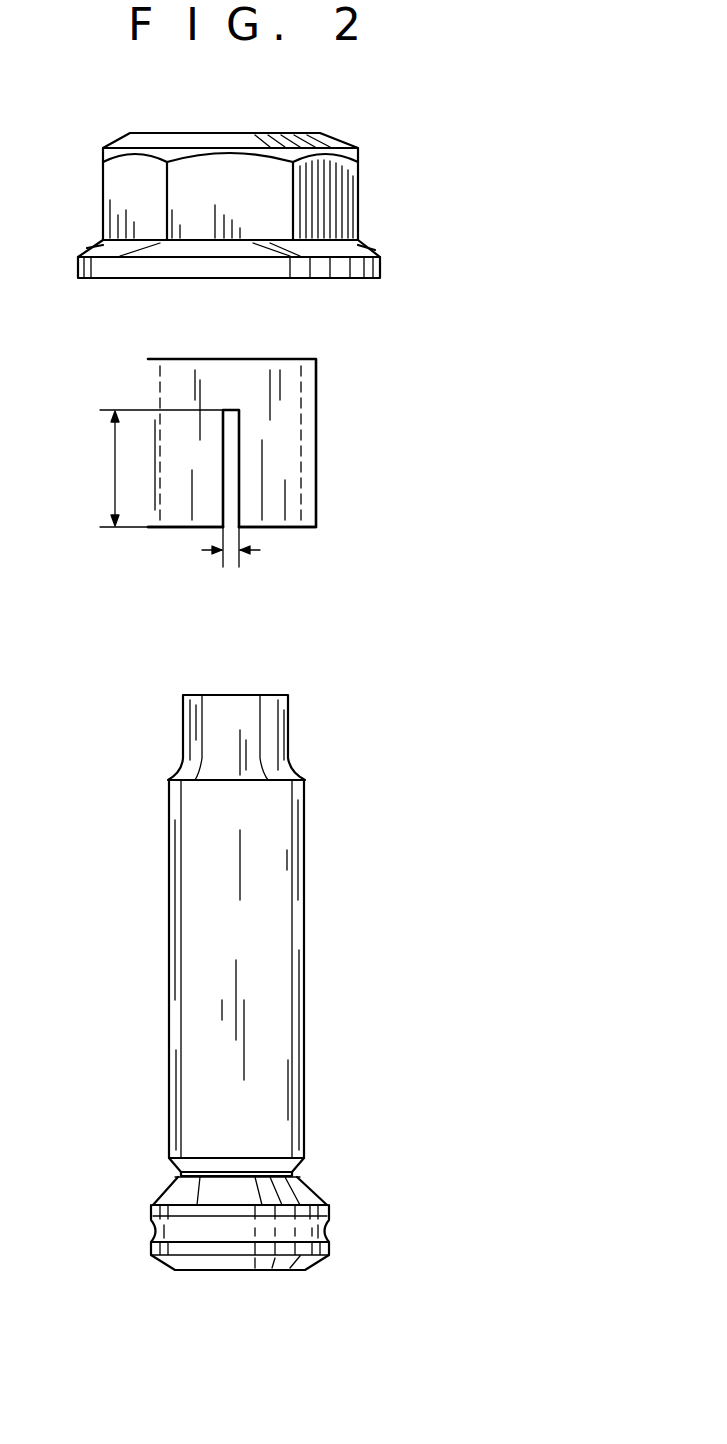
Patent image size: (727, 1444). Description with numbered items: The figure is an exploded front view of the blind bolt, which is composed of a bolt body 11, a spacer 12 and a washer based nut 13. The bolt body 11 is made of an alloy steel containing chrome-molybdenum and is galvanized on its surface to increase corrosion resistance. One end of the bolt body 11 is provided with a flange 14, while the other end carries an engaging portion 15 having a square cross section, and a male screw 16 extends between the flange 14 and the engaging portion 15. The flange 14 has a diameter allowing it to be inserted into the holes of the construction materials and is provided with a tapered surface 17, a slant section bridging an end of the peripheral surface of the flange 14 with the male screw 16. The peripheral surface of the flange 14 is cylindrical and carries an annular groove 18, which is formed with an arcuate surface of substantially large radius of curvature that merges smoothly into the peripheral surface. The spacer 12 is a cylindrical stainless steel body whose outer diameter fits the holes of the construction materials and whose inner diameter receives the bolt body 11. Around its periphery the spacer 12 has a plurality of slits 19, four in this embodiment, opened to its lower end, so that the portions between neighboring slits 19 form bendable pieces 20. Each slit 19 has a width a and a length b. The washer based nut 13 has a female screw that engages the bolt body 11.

The bolt body 11 is at (289, 996).
The spacer 12 is at (264, 464).
The washer based nut 13 is at (360, 197).
The flange 14 is at (329, 1243).
The engaging portion 15 is at (287, 747).
The male screw 16 is at (304, 1080).
The tapered surface 17 is at (313, 1192).
The annular groove 18 is at (325, 1228).
The slit 19 is at (232, 480).
The bendable piece 20 is at (183, 527).